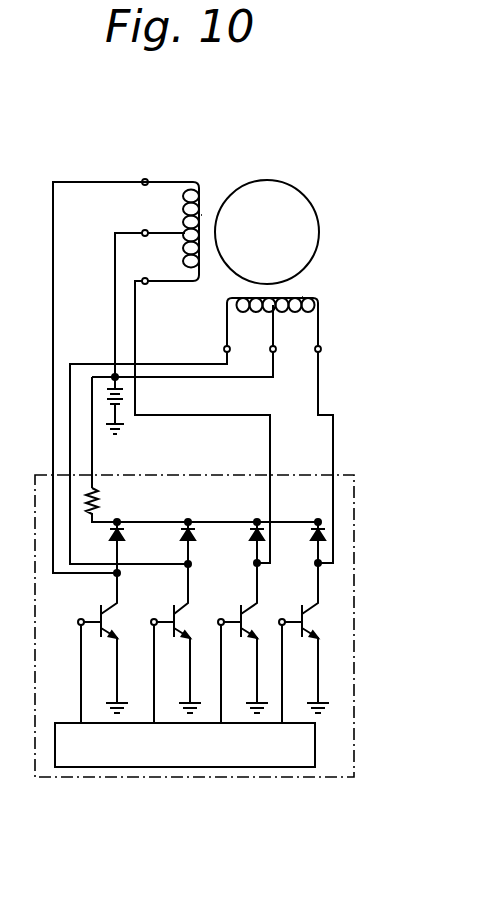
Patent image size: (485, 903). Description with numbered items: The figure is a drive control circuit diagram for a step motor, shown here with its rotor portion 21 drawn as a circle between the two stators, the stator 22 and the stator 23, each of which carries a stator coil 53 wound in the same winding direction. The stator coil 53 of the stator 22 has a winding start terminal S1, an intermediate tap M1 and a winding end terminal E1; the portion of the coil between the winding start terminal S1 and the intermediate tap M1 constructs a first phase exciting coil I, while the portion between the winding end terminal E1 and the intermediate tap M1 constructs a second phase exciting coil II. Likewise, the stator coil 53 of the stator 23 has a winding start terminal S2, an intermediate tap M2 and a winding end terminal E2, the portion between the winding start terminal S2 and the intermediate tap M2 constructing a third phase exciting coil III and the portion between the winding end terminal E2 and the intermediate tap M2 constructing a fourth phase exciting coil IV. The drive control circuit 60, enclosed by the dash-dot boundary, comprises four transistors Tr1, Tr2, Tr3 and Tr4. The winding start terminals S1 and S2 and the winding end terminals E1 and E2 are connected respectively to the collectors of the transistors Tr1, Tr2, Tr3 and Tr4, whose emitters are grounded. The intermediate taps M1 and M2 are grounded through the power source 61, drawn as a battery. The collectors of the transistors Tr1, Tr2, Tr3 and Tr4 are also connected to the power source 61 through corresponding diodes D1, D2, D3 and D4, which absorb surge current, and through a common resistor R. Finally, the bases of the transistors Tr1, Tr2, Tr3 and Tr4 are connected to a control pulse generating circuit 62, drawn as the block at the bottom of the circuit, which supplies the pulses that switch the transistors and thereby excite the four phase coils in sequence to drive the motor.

The motor 21 is at (292, 183).
The stator 22 is at (198, 187).
The stator 23 is at (325, 305).
The stator coil 53 is at (201, 215).
The drive control circuit 60 is at (360, 527).
The power source 61 is at (110, 405).
The control pulse generating circuit 62 is at (305, 735).
The resistor R is at (100, 502).
The diode D1 is at (110, 538).
The diode D2 is at (181, 537).
The diode D3 is at (250, 537).
The diode D4 is at (312, 537).
The transistor Tr1 is at (114, 622).
The transistor Tr2 is at (186, 622).
The transistor Tr3 is at (252, 622).
The transistor Tr4 is at (313, 622).
The winding start terminal S1 is at (143, 180).
The intermediate tap M1 is at (144, 231).
The winding end terminal E1 is at (145, 285).
The winding start terminal S2 is at (224, 349).
The intermediate tap M2 is at (276, 351).
The winding end terminal E2 is at (321, 350).
The first phase exciting coil I is at (186, 194).
The second phase exciting coil II is at (240, 299).
The third phase exciting coil III is at (187, 265).
The fourth phase exciting coil IV is at (310, 312).